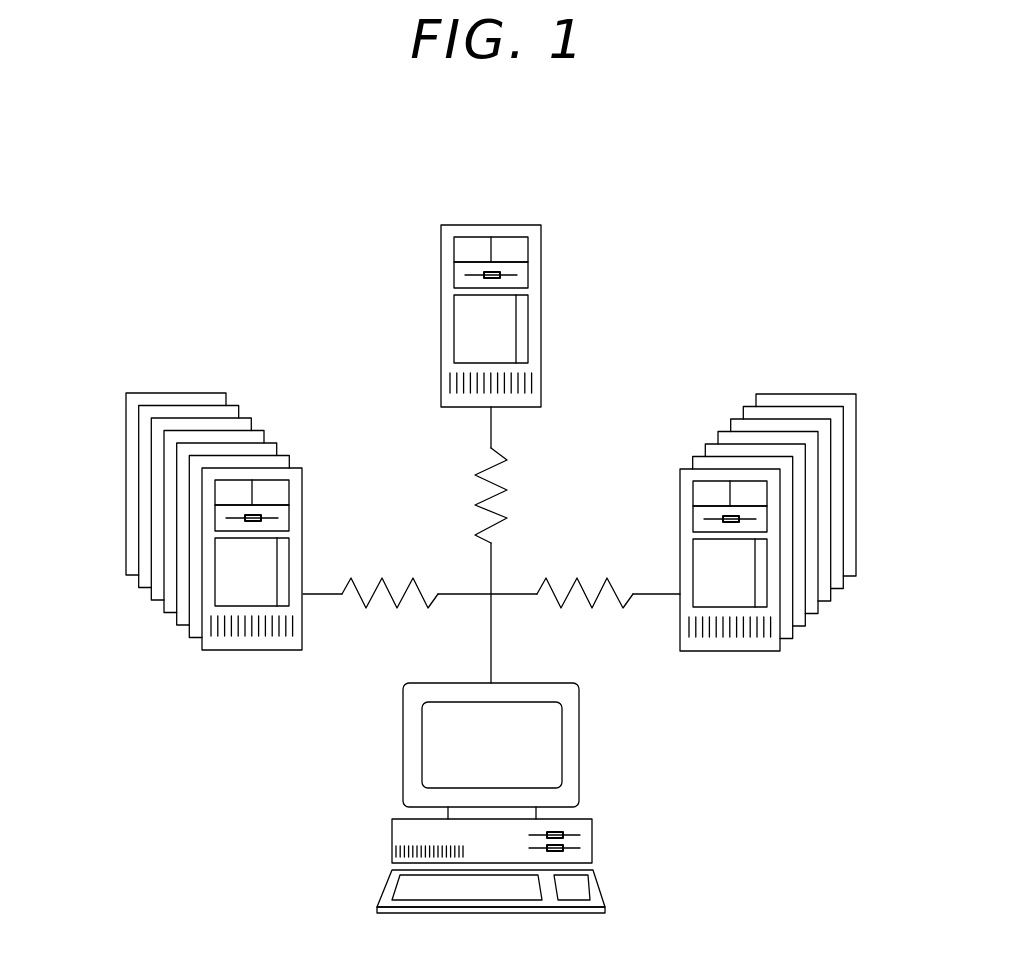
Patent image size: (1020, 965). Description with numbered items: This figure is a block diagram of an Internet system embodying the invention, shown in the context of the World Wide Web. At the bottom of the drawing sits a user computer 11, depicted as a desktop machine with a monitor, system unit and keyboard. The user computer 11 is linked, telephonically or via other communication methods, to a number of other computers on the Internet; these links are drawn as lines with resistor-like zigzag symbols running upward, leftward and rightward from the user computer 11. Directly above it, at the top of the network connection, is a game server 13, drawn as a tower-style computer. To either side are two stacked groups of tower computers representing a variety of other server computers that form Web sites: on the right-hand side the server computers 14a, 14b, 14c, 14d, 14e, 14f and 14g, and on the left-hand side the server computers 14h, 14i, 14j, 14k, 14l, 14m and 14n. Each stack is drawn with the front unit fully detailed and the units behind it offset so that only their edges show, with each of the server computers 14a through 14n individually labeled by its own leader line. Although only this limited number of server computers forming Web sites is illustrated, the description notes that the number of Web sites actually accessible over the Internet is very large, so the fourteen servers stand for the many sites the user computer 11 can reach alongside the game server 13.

The user computer 11 is at (579, 718).
The game server 13 is at (541, 325).
The server computer 14a is at (780, 652).
The server computer 14b is at (785, 639).
The server computer 14c is at (797, 627).
The server computer 14d is at (810, 614).
The server computer 14e is at (822, 602).
The server computer 14f is at (835, 589).
The server computer 14g is at (847, 577).
The server computer 14h is at (202, 651).
The server computer 14i is at (200, 637).
The server computer 14j is at (188, 625).
The server computer 14k is at (176, 612).
The server computer 14l is at (163, 600).
The server computer 14m is at (139, 588).
The server computer 14n is at (127, 575).